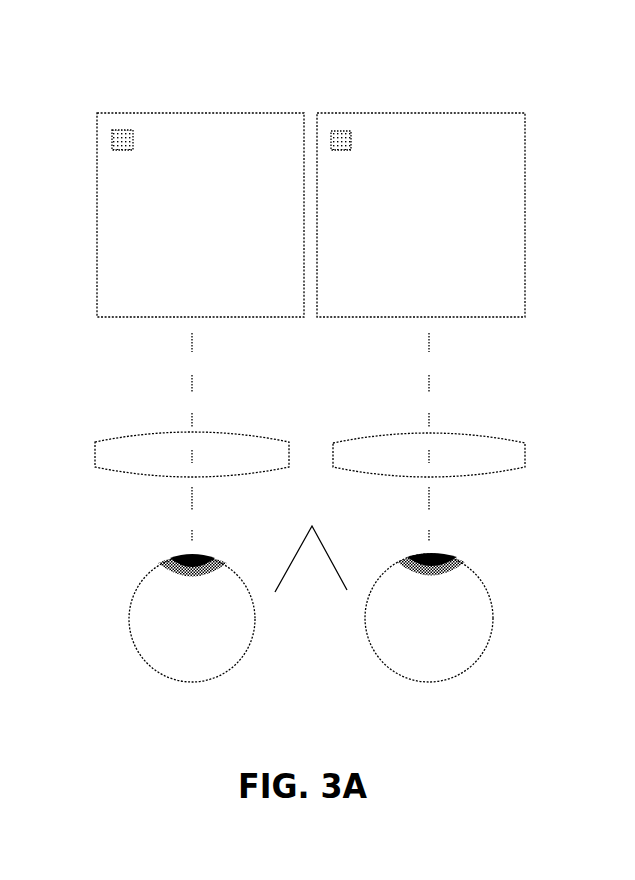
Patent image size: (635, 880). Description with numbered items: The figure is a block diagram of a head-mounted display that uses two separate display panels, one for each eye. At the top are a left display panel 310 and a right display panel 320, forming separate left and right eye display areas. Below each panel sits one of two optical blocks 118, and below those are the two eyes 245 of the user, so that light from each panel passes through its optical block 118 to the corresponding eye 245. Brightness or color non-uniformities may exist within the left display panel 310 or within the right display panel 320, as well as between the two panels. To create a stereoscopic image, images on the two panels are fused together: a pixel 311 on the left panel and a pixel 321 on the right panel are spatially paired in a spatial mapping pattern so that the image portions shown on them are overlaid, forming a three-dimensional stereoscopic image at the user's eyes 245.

The left display panel 310 is at (91, 125).
The pixel 311 is at (136, 129).
The right display panel 320 is at (526, 129).
The pixel 321 is at (354, 129).
The optical block 118 is at (87, 455).
The eyes 245 is at (153, 668).